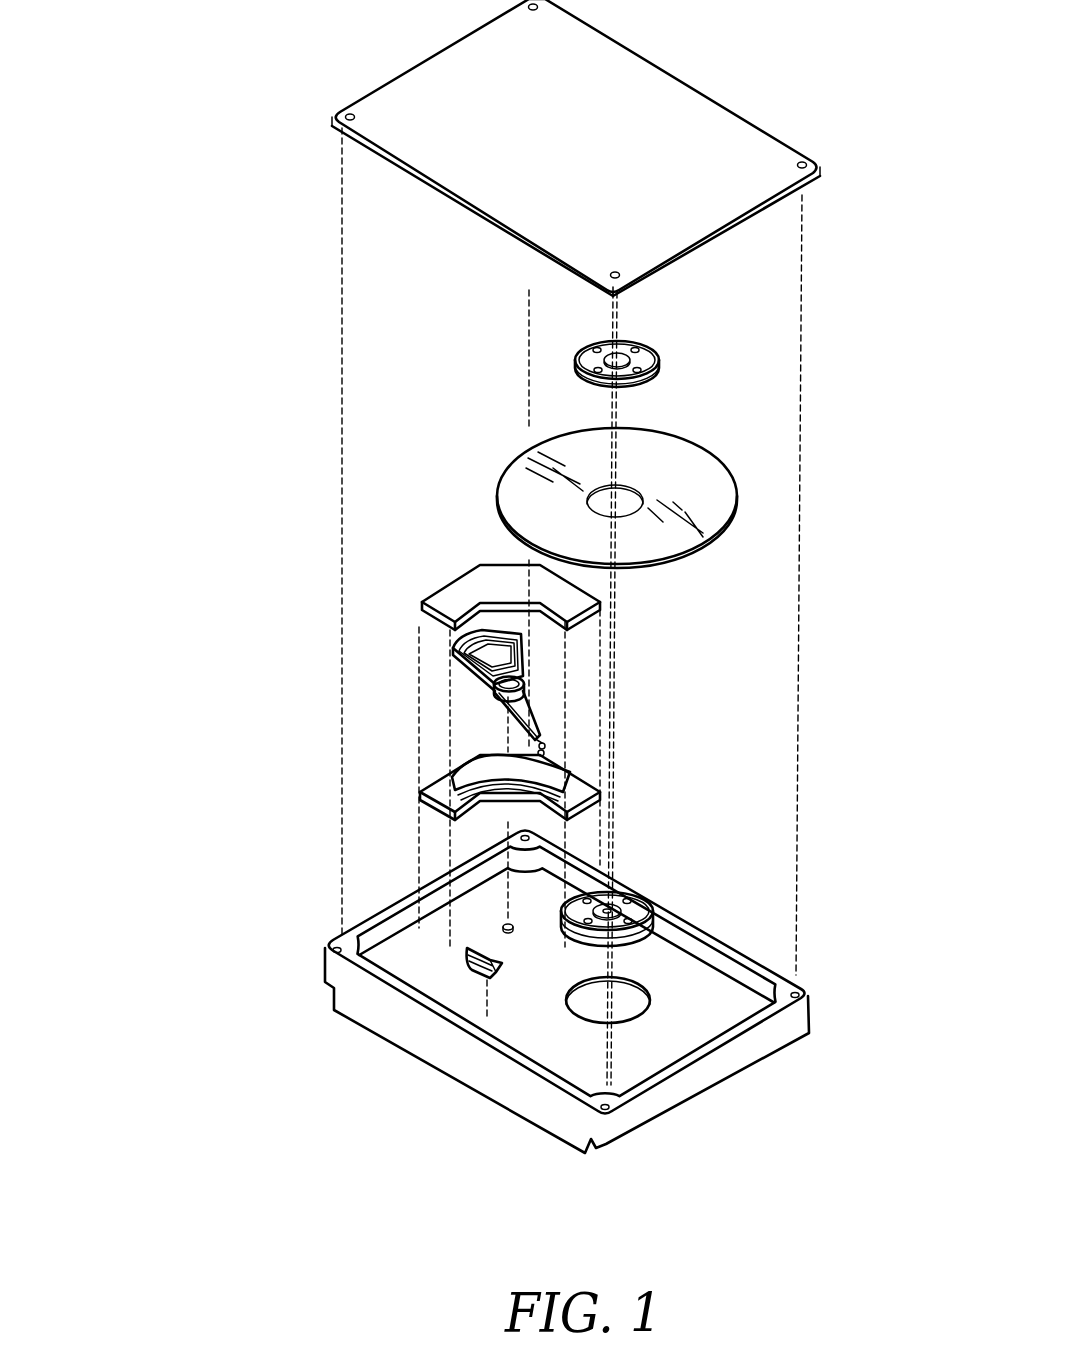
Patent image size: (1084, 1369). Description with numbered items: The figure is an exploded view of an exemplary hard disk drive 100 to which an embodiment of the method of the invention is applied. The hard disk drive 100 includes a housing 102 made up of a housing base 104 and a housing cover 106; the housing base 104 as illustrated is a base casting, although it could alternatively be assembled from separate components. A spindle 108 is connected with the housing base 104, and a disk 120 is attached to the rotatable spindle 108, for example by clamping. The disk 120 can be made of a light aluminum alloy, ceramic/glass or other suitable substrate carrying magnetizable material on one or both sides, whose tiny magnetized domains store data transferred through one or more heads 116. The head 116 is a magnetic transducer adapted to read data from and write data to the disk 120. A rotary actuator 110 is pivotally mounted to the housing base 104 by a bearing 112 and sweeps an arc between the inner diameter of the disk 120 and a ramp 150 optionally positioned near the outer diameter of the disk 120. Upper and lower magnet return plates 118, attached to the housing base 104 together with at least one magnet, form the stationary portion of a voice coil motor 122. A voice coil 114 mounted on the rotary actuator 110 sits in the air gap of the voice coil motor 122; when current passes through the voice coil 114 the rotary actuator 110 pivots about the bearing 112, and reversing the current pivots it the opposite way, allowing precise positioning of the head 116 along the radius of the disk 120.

The hard disk drive 100 is at (852, 484).
The housing 102 is at (280, 906).
The housing base 104 is at (433, 1037).
The housing cover 106 is at (606, 160).
The spindle 108 is at (647, 355).
The rotary actuator 110 is at (572, 740).
The bearing 112 is at (527, 688).
The voice coil 114 is at (473, 665).
The head 116 is at (547, 752).
The upper and lower magnet return plates 118 is at (462, 773).
The disk 120 is at (678, 475).
The voice coil motor 122 is at (452, 548).
The ramp 150 is at (458, 983).